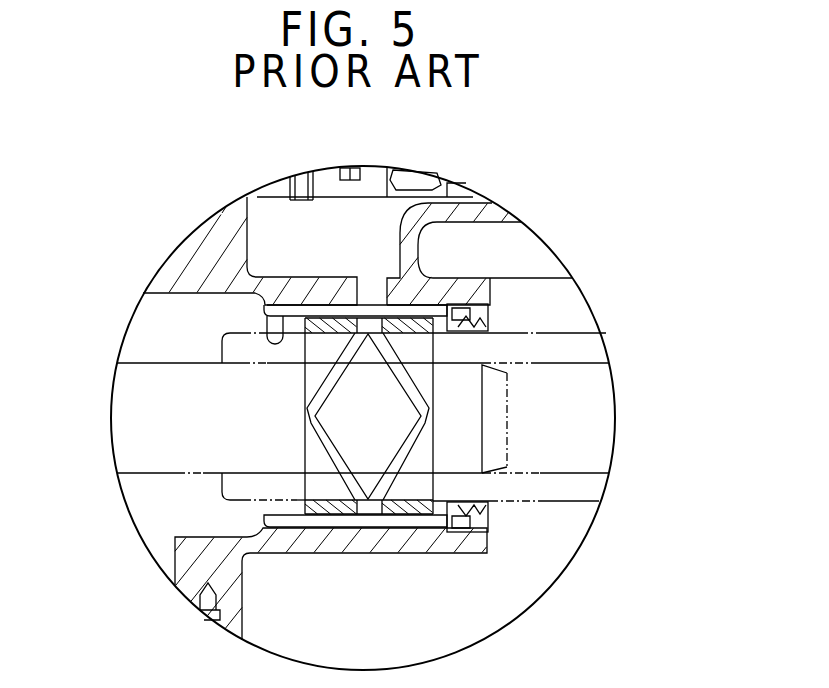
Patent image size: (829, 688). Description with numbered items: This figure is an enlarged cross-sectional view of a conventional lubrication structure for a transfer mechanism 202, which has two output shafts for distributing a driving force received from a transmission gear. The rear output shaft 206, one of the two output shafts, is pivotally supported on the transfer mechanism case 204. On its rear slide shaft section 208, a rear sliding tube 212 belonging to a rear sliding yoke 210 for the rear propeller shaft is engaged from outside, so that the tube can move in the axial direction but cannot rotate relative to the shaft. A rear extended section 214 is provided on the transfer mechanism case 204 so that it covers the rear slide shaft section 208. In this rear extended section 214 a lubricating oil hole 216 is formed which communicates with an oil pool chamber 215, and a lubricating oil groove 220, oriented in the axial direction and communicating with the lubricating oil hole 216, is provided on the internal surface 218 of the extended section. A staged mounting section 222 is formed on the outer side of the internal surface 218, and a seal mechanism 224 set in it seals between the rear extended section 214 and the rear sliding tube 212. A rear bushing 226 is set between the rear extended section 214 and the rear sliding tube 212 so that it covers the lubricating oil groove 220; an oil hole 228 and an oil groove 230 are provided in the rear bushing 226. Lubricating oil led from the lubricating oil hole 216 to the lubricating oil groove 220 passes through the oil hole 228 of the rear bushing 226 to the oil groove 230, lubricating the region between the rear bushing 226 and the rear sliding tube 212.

The transfer mechanism 202 is at (545, 191).
The transfer mechanism case 204 is at (183, 268).
The rear output shaft 206 is at (167, 479).
The rear slide shaft section 208 is at (252, 400).
The rear sliding yoke 210 is at (566, 335).
The rear sliding tube 212 is at (224, 338).
The rear extended section 214 is at (292, 287).
The oil pool chamber 215 is at (326, 220).
The lubricating oil hole 216 is at (368, 292).
The internal surface 218 is at (257, 330).
The lubricating oil groove 220 is at (337, 313).
The staged mounting section 222 is at (497, 313).
The seal mechanism 224 is at (489, 319).
The rear bushing 226 is at (436, 378).
The oil hole 228 is at (425, 335).
The oil groove 230 is at (430, 400).